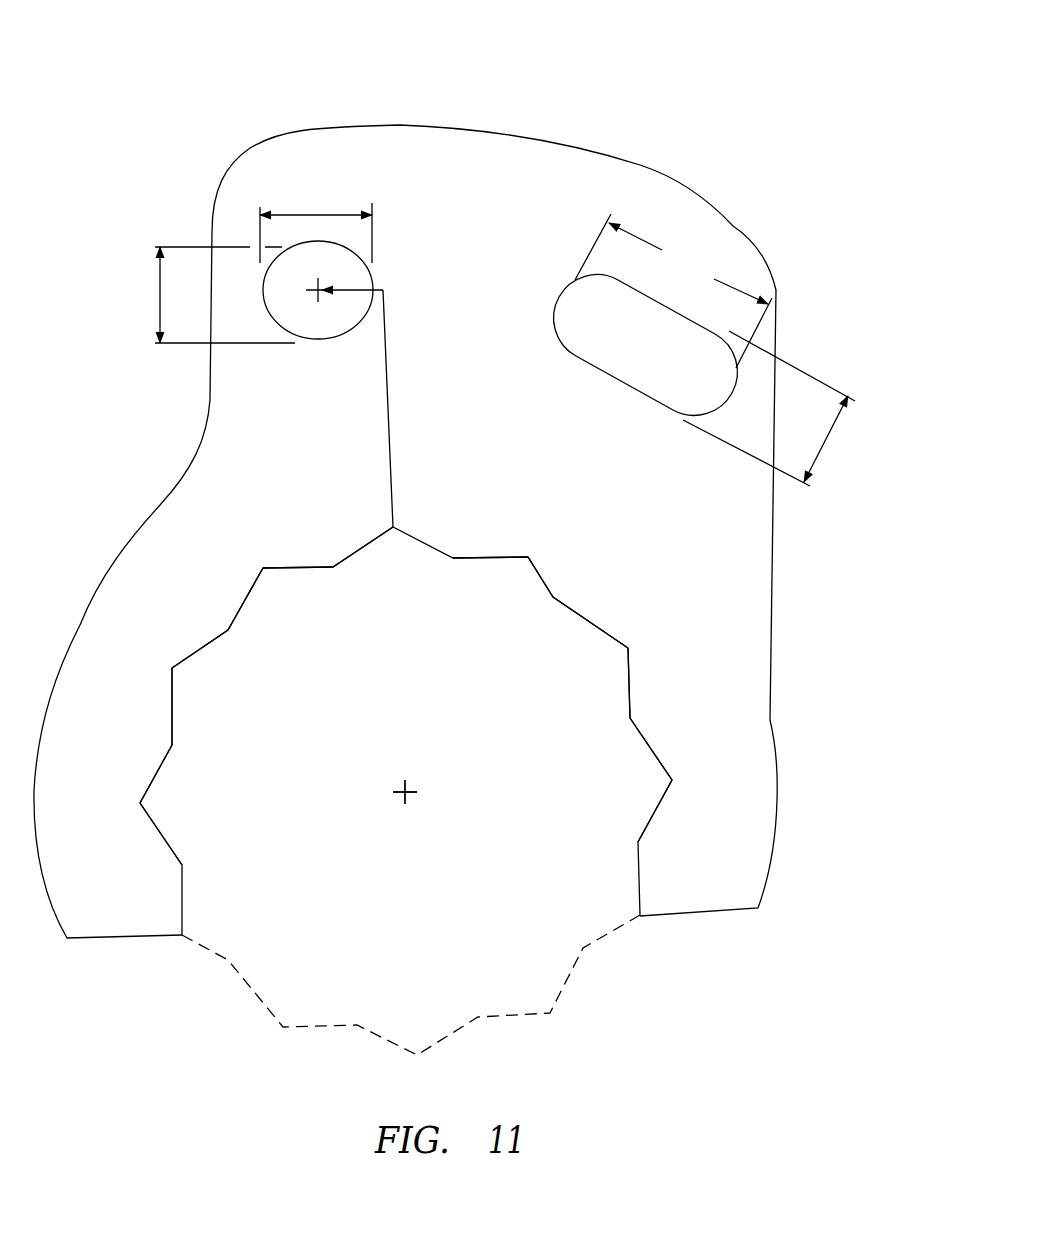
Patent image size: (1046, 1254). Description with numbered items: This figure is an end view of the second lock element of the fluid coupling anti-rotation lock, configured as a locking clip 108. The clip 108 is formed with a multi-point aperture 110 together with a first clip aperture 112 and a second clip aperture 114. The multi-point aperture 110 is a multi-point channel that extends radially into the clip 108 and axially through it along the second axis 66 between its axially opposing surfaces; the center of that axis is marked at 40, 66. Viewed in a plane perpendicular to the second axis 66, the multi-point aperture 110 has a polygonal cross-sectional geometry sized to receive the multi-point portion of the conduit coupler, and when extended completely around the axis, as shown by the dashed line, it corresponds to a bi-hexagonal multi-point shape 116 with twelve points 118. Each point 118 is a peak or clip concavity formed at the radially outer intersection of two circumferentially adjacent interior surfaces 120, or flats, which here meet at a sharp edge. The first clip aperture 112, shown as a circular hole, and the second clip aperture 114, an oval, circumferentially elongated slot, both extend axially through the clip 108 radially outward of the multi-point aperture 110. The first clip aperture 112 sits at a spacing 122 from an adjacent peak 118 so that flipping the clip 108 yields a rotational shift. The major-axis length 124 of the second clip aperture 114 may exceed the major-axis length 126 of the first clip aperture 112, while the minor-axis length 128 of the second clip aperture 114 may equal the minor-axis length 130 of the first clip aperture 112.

The locking clip 108 is at (652, 92).
The multi-point aperture 110 is at (420, 718).
The first clip aperture 112 is at (335, 325).
The second clip aperture 114 is at (662, 362).
The multi-point shape 116 is at (227, 962).
The points 118 is at (396, 540).
The interior surfaces 120 is at (312, 567).
The spacing 122 is at (360, 286).
The length of major axis of second clip aperture 124 is at (673, 291).
The length of major axis of first clip aperture 126 is at (316, 214).
The length of minor axis of second clip aperture 128 is at (829, 442).
The length of minor axis of first clip aperture 130 is at (155, 297).
The axis of rotation 40 is at (408, 797).
The second axis 66 is at (405, 792).